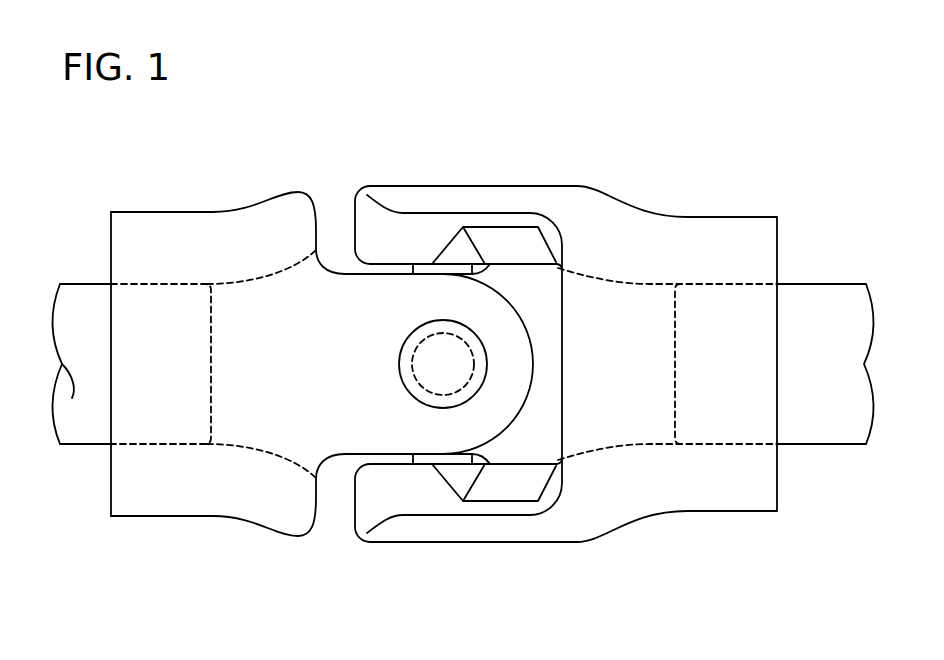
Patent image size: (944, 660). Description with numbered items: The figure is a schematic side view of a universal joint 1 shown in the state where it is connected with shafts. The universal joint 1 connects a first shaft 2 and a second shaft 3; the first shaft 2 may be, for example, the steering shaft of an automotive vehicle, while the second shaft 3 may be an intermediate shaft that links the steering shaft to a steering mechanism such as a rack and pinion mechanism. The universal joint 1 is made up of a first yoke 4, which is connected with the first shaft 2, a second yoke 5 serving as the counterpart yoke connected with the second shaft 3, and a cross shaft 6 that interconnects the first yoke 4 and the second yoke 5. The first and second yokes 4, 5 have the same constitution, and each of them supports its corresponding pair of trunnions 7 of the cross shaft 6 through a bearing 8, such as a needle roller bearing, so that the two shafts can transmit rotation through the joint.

The universal joint 1 is at (652, 165).
The first shaft 2 is at (823, 292).
The second shaft 3 is at (75, 288).
The first yoke 4 is at (551, 546).
The second yoke 5 is at (157, 518).
The cross shaft 6 is at (473, 352).
The trunnions 7 is at (492, 266).
The bearing 8 is at (487, 383).